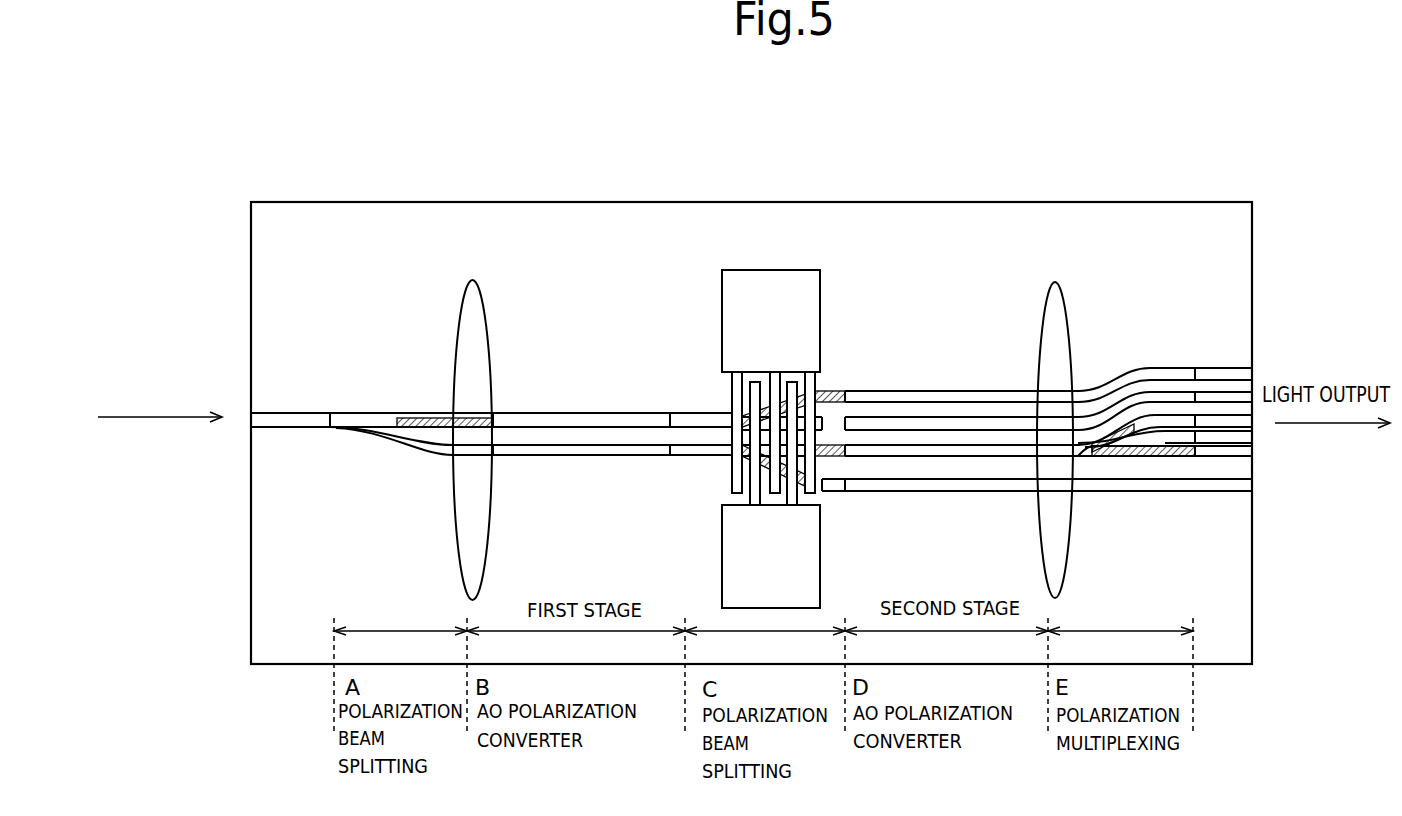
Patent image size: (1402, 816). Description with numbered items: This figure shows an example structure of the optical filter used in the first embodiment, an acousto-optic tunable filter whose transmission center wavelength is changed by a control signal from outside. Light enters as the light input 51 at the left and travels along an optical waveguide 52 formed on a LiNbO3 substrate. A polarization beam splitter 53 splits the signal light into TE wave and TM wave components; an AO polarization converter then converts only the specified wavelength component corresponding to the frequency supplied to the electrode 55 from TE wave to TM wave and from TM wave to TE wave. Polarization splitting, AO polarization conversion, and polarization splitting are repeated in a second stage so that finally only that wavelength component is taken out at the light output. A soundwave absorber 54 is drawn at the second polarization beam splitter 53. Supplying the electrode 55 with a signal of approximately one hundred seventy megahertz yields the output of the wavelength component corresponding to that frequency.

The light input 51 is at (151, 397).
The optical waveguide 52 is at (276, 413).
The polarization beam splitter 53 is at (418, 413).
The soundwave absorber 54 is at (1055, 282).
The electrode 55 is at (807, 558).